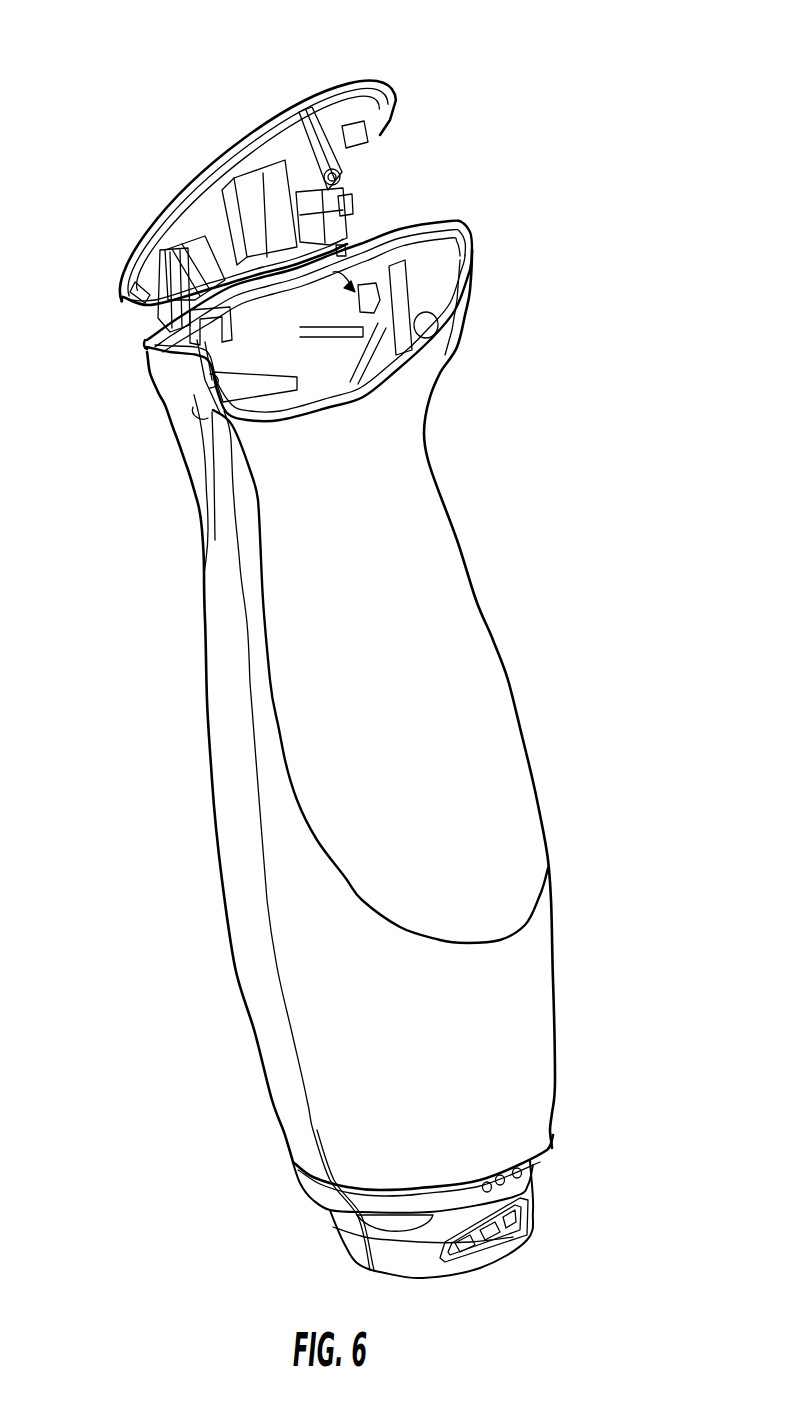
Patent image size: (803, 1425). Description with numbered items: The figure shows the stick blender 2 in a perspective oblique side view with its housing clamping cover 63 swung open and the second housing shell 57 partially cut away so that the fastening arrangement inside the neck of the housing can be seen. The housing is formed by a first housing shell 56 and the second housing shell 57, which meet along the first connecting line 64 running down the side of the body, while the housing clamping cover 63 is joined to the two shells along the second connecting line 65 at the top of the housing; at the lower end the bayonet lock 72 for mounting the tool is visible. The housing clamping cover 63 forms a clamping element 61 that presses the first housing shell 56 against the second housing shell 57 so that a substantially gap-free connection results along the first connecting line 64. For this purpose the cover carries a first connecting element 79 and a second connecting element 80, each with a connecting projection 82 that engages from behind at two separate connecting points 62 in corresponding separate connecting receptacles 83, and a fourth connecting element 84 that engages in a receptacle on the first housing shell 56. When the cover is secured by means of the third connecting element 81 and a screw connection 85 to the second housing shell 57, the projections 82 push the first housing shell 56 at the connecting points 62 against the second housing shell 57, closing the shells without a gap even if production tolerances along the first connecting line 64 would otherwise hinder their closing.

The stick blender 2 is at (581, 690).
The first housing shell 56 is at (220, 757).
The second housing shell 57 is at (533, 952).
The clamping element 61 is at (390, 175).
The connecting points 62 is at (348, 308).
The housing clamping cover 63 is at (232, 152).
The first connecting line 64 is at (240, 567).
The second connecting line 65 is at (393, 230).
The bayonet lock 72 is at (525, 1240).
The first connecting element 79 is at (150, 300).
The second connecting element 80 is at (348, 203).
The third connecting element 81 is at (300, 183).
The connecting projections 82 is at (187, 327).
The connecting receptacles 83 is at (397, 273).
The fourth connecting element 84 is at (176, 236).
The screw connection 85 is at (330, 140).